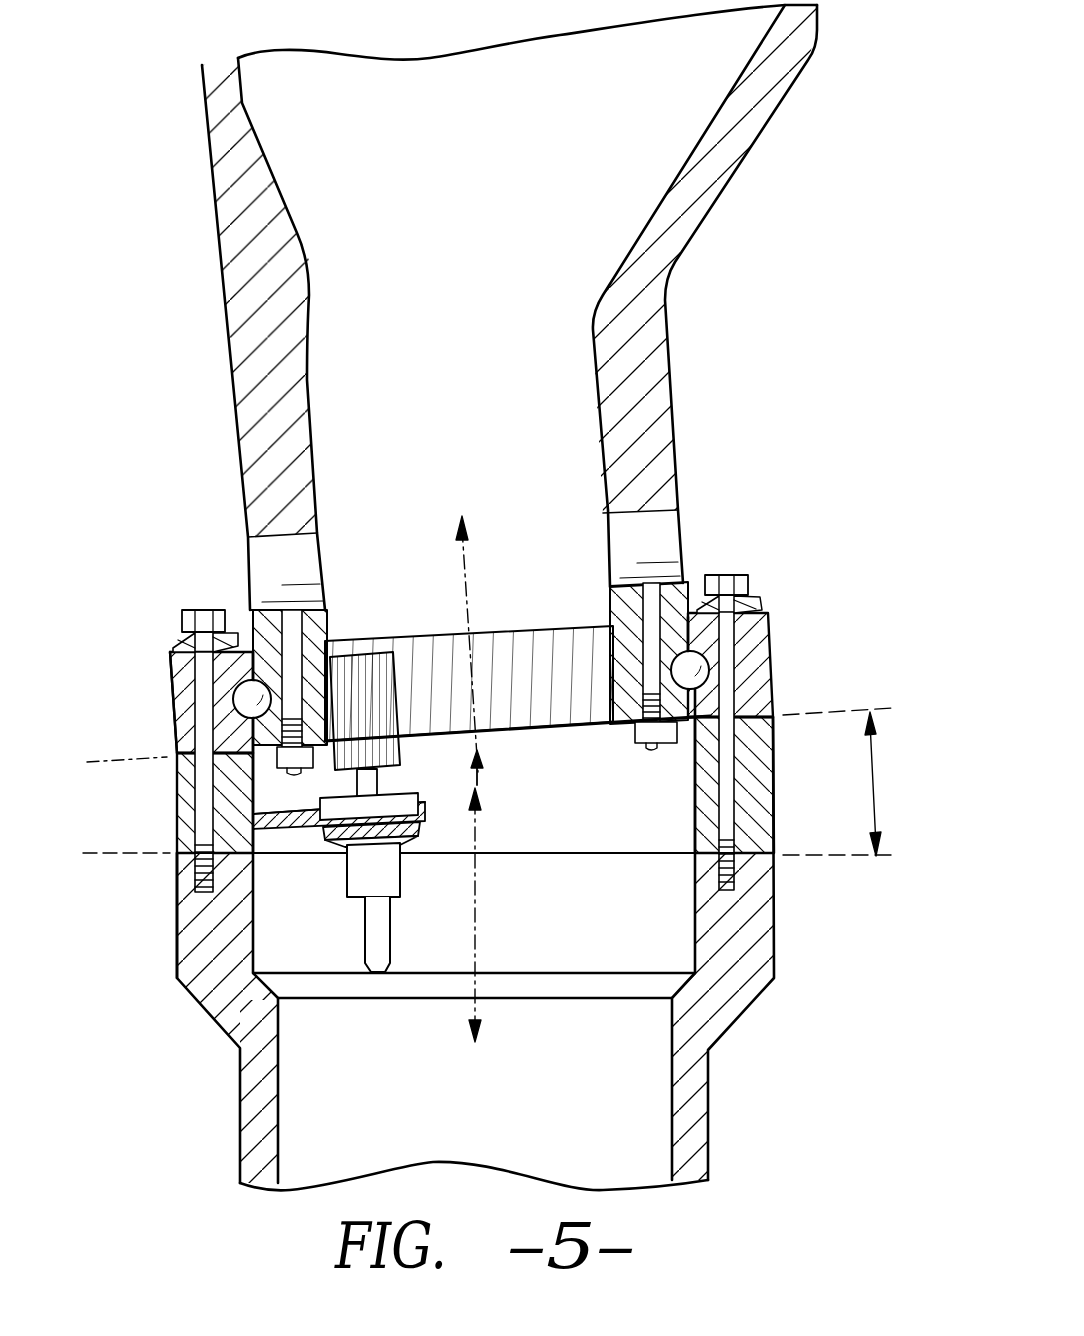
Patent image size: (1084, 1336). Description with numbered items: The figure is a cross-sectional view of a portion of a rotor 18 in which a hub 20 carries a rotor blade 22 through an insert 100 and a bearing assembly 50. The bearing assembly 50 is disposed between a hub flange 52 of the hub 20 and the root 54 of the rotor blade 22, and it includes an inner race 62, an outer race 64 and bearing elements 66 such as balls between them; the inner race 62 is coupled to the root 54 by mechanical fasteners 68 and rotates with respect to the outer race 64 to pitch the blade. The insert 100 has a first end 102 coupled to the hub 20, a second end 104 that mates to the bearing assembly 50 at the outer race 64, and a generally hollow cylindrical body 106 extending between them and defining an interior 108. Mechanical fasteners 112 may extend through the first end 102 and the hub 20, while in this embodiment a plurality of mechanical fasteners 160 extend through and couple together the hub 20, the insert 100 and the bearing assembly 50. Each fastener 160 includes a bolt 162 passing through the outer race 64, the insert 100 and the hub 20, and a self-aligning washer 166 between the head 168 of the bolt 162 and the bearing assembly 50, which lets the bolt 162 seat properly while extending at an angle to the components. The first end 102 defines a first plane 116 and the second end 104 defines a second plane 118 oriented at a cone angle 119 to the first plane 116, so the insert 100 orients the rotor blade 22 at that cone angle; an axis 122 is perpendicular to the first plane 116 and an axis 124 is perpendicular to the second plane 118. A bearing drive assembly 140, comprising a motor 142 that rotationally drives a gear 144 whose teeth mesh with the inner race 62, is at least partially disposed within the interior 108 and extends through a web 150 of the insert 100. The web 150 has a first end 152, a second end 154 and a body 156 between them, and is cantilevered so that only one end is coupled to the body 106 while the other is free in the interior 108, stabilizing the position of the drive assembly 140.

The rotor 18 is at (168, 123).
The hub 20 is at (213, 1081).
The rotor blade 22 is at (182, 352).
The bearing assembly 50 is at (815, 667).
The hub flange 52 is at (765, 847).
The root 54 is at (684, 611).
The inner race 62 is at (627, 653).
The outer race 64 is at (780, 600).
The bearing elements 66 is at (760, 678).
The mechanical fasteners 68 is at (322, 640).
The insert 100 is at (152, 790).
The first end 102 is at (235, 890).
The second end 104 is at (172, 735).
The body 106 is at (185, 775).
The interior 108 is at (580, 814).
The mechanical fasteners 112 is at (180, 875).
The first plane 116 is at (823, 858).
The second plane 118 is at (815, 712).
The cone angle 119 is at (878, 790).
The axis 122 is at (477, 945).
The axis 124 is at (467, 575).
The bearing drive assembly 140 is at (420, 880).
The motor 142 is at (388, 860).
The gear 144 is at (372, 678).
The web 150 is at (308, 842).
The first end 152 is at (250, 820).
The second end 154 is at (401, 784).
The body 156 is at (288, 818).
The mechanical fasteners 160 is at (168, 690).
The bolt 162 is at (200, 703).
The self-aligning washer 166 is at (177, 642).
The head 168 is at (205, 618).